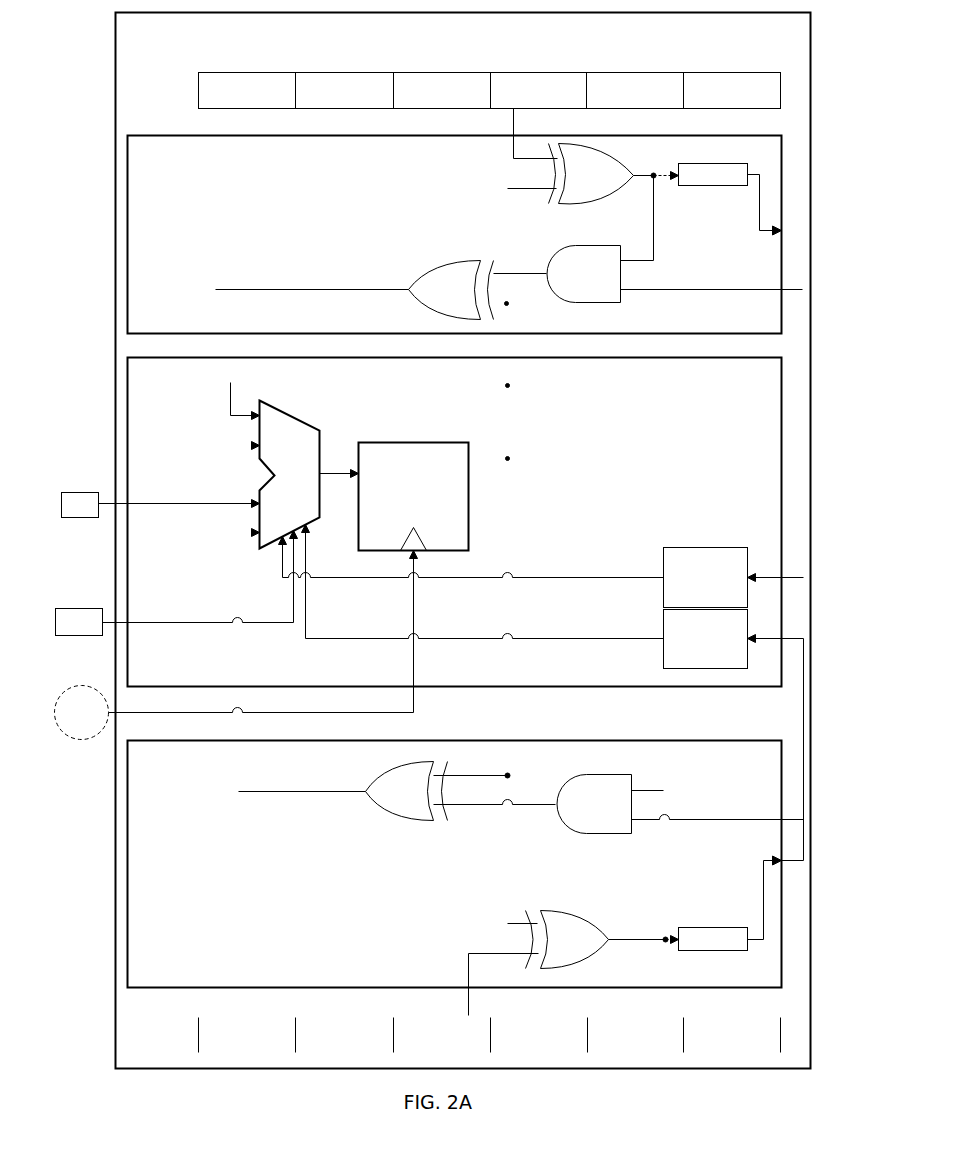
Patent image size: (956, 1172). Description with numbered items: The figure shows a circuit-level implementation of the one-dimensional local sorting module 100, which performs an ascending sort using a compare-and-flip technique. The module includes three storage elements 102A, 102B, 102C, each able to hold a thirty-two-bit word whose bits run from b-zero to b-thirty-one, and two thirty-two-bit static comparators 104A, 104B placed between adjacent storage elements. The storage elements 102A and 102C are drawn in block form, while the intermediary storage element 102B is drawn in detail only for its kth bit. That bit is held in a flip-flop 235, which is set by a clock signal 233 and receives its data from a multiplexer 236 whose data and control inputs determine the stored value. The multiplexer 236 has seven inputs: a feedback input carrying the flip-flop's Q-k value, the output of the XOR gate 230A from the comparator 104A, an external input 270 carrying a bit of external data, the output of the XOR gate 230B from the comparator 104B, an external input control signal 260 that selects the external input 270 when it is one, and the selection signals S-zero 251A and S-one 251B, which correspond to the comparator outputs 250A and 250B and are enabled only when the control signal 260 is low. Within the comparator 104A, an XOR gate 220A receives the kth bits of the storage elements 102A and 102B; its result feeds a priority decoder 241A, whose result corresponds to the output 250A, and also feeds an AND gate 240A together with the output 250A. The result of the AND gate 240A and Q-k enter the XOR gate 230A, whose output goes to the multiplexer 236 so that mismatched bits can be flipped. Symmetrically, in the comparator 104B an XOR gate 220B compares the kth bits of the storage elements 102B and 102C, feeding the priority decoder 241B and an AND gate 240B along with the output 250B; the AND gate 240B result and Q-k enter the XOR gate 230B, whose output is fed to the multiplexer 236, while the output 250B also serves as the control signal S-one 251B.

The local sorting module 100 is at (151, 41).
The storage element 102A is at (198, 90).
The storage element 102B is at (127, 357).
The storage element 102C is at (198, 1035).
The comparator 104A is at (181, 211).
The comparator 104B is at (181, 978).
The XOR gate 220A is at (614, 184).
The XOR gate 220B is at (592, 948).
The XOR gate 230A is at (468, 298).
The XOR gate 230B is at (426, 800).
The AND gate 240A is at (604, 283).
The AND gate 240B is at (614, 813).
The priority decoder 241A is at (735, 183).
The priority decoder 241B is at (735, 948).
The multiplexer 236 is at (312, 483).
The flip-flop 235 is at (429, 505).
The clock signal 233 is at (97, 721).
The signal input S0 251A is at (729, 600).
The signal input S1 251B is at (729, 661).
The output of comparator 104A 250A is at (802, 232).
The output of comparator 104B 250B is at (803, 834).
The external input control signal 260 is at (100, 636).
The external input 270 is at (85, 490).